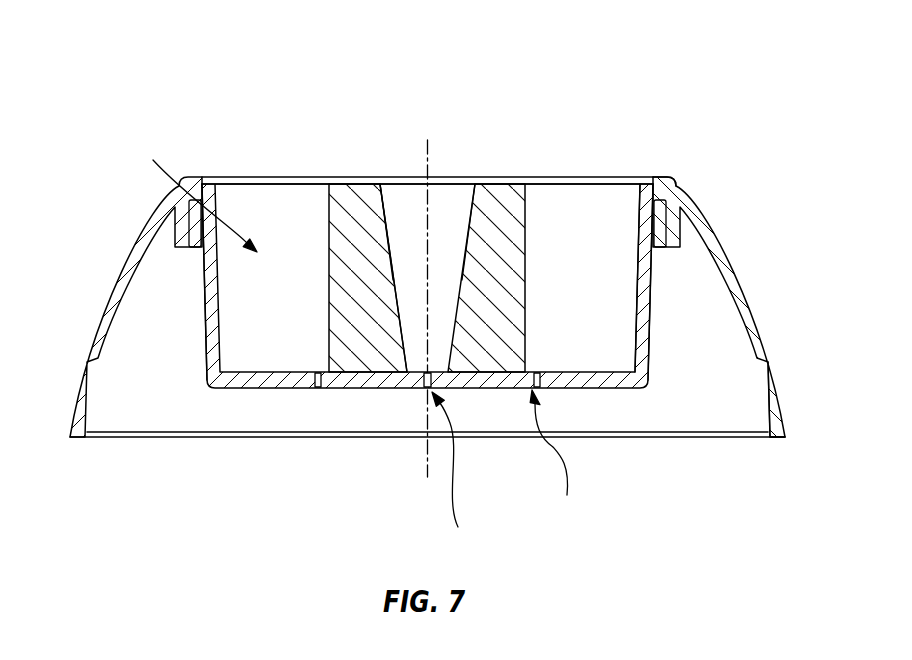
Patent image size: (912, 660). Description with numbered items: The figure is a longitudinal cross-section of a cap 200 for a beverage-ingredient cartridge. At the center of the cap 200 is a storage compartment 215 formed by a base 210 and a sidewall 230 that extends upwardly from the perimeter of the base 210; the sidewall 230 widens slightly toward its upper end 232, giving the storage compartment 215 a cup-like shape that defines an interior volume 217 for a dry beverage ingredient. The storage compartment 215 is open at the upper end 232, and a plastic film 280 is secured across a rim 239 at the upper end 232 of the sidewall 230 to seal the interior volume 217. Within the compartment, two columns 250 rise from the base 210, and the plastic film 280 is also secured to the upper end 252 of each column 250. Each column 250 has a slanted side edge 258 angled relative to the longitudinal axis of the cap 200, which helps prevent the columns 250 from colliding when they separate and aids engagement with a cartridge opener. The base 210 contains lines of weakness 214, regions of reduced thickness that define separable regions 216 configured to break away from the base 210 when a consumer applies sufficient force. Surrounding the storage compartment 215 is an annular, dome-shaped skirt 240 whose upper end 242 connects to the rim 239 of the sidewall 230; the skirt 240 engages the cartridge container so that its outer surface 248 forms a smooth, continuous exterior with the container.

The cap 200 is at (260, 128).
The base 210 is at (590, 373).
The line of weakness 214 is at (507, 477).
The storage compartment 215 is at (207, 284).
The separable region 216 is at (347, 382).
The interior volume 217 is at (192, 186).
The sidewall 230 is at (640, 302).
The upper end 232 is at (645, 237).
The rim 239 is at (647, 182).
The skirt 240 is at (143, 227).
The upper end 242 is at (777, 440).
The outer surface 248 is at (742, 273).
The column 250 is at (350, 197).
The upper end 252 is at (360, 197).
The side edge 258 is at (390, 207).
The plastic film 280 is at (245, 177).